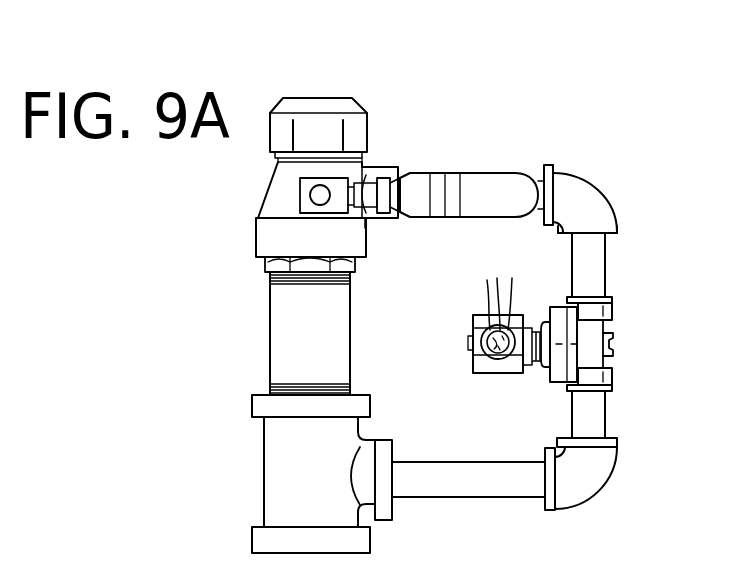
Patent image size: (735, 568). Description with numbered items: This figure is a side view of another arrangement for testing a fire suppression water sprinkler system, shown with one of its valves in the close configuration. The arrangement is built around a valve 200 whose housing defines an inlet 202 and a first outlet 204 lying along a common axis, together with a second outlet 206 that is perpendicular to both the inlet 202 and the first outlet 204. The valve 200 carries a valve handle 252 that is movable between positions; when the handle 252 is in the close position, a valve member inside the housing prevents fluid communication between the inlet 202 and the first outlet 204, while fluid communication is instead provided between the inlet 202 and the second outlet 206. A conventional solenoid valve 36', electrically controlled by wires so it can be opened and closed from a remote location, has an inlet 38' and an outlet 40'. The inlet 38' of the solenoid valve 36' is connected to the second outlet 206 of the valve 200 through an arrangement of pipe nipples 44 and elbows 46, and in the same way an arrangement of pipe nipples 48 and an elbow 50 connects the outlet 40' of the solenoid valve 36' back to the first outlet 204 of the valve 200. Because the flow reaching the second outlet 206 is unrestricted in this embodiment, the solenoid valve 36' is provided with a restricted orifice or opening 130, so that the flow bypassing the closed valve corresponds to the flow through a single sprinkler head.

The valve 200 is at (356, 144).
The inlet 202 is at (363, 106).
The first outlet 204 is at (366, 240).
The second outlet 206 is at (396, 168).
The valve handle 252 is at (478, 178).
The pipe nipples 44 is at (536, 175).
The elbows 46 is at (597, 190).
The inlet 38' is at (633, 299).
The restricted orifice 130 is at (612, 317).
The solenoid valve 36' is at (651, 344).
The outlet 40' is at (633, 375).
The pipe nipples 48 is at (606, 400).
The elbow 50 is at (604, 474).